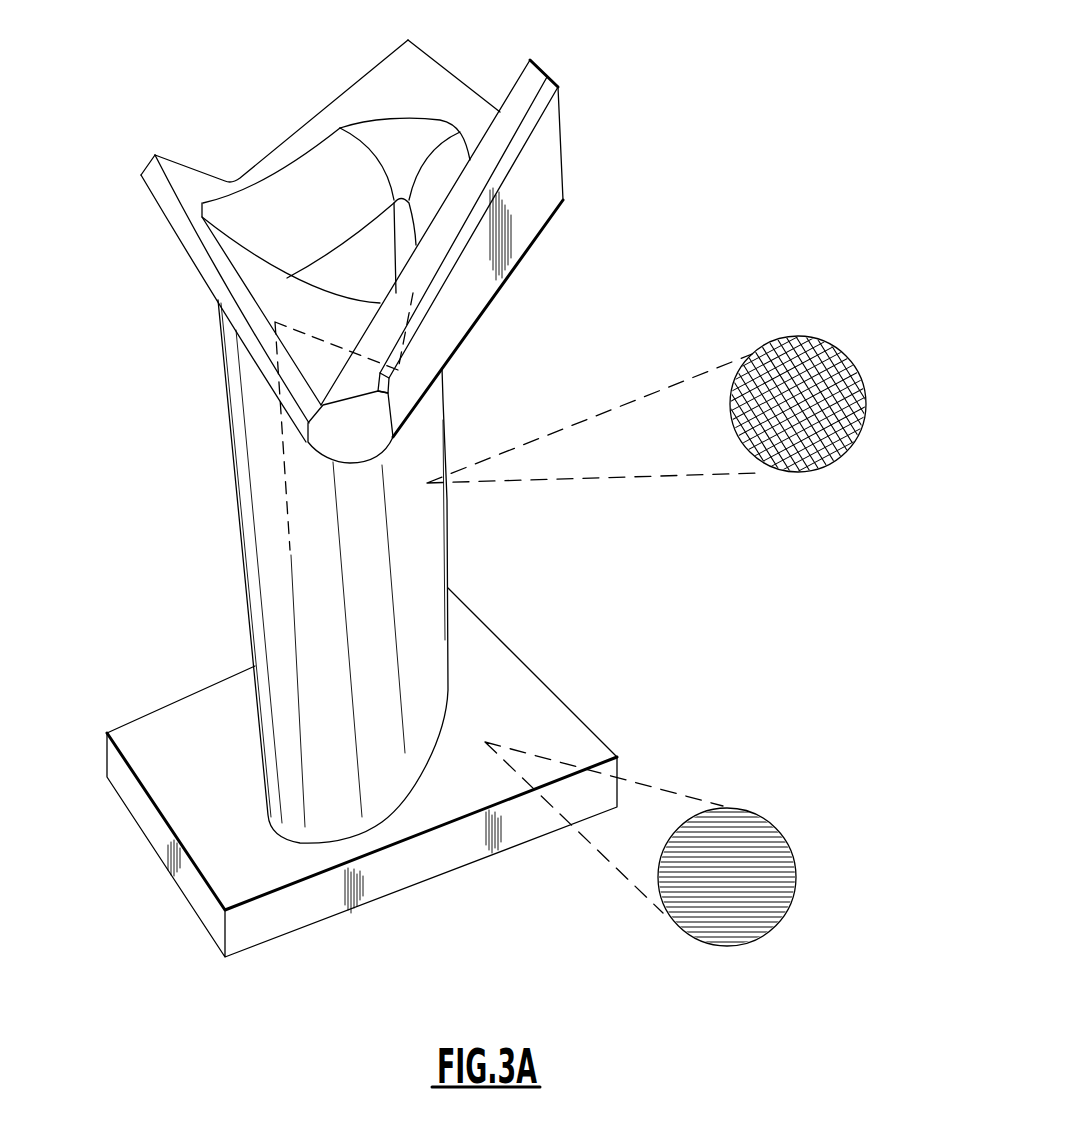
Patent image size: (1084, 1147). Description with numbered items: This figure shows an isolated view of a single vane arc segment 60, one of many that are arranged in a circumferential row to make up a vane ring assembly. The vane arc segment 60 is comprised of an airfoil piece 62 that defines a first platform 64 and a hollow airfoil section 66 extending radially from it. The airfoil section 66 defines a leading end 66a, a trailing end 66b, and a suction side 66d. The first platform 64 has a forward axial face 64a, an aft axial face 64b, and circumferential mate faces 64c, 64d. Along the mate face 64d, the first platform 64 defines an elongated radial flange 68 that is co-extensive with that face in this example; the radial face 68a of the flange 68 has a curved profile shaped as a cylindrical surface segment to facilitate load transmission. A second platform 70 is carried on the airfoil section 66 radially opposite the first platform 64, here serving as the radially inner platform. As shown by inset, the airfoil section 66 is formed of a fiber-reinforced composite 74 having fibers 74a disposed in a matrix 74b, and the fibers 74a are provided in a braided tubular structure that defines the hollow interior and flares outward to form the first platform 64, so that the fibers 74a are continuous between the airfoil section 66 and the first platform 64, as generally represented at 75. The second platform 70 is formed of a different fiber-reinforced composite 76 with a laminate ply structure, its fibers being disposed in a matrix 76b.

The vane arc segment 60 is at (118, 926).
The airfoil piece 62 is at (233, 483).
The first platform 64 is at (200, 214).
The forward axial face 64a is at (165, 192).
The aft axial face 64b is at (441, 62).
The circumferential mate face 64c is at (290, 135).
The circumferential mate face 64d is at (537, 196).
The airfoil section 66 is at (426, 562).
The leading end 66a is at (247, 574).
The trailing end 66b is at (445, 420).
The suction side 66d is at (325, 503).
The radial flange 68 is at (522, 90).
The radial face 68a is at (487, 150).
The second platform 70 is at (127, 768).
The fiber-reinforced composite 74 is at (866, 381).
The fibers 74a is at (826, 356).
The matrix 74b is at (797, 427).
The continuous fiber region 75 is at (282, 407).
The fiber-reinforced composite 76 is at (789, 851).
The matrix 76b is at (742, 840).